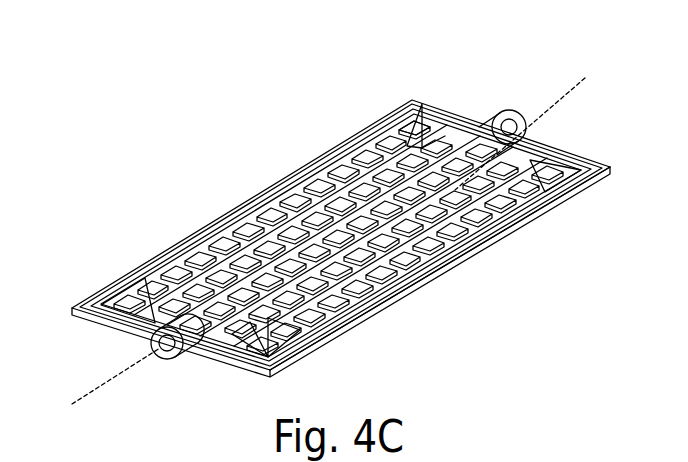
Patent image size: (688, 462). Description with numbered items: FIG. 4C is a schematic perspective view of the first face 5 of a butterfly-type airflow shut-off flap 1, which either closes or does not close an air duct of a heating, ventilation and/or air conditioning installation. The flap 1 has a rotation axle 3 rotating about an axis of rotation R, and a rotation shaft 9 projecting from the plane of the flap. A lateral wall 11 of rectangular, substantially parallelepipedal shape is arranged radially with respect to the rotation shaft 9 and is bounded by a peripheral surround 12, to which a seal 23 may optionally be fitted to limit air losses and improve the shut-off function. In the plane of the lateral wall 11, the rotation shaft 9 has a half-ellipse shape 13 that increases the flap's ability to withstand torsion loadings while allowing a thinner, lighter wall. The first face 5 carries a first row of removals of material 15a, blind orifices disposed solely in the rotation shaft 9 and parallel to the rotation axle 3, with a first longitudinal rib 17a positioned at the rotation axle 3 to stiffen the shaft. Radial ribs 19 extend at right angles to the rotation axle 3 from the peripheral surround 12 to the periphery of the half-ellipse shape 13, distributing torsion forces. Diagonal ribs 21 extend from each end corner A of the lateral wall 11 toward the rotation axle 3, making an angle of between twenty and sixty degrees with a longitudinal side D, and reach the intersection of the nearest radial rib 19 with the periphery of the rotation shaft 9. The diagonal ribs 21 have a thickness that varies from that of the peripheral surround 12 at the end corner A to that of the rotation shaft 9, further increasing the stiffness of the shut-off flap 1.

The airflow shut-off flap 1 is at (557, 75).
The rotation axle 3 is at (178, 360).
The first face 5 is at (432, 132).
The rotation shaft 9 is at (514, 161).
The lateral wall 11 is at (335, 145).
The peripheral surround 12 is at (170, 247).
The half-ellipse shape 13 is at (427, 283).
The first row of removals of material 15a is at (207, 225).
The first longitudinal rib 17a is at (501, 253).
The radial rib 19 is at (250, 205).
The diagonal rib 21 is at (412, 138).
The seal 23 is at (132, 268).
The end corner A is at (561, 170).
The longitudinal side D is at (531, 192).
The axis of rotation R is at (100, 411).